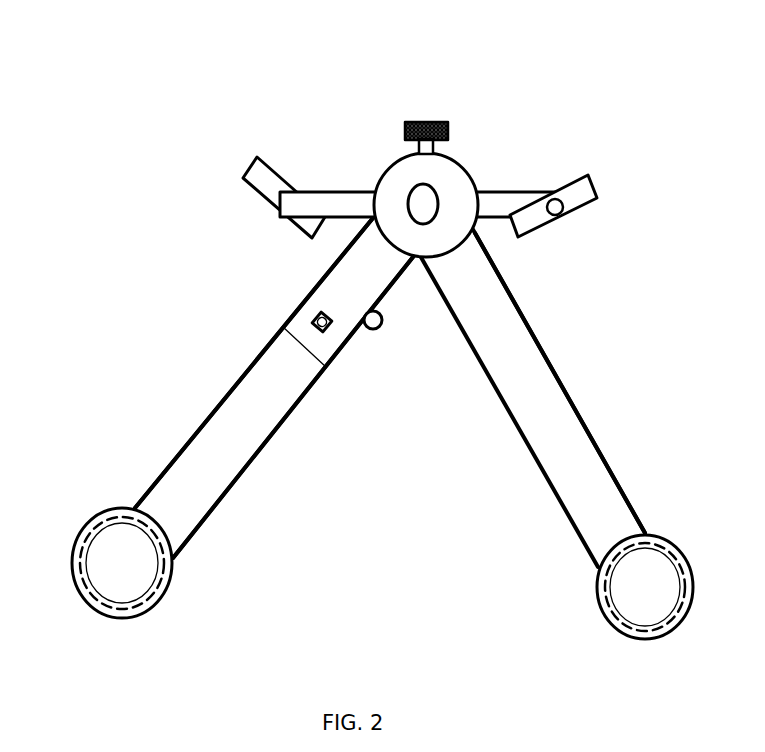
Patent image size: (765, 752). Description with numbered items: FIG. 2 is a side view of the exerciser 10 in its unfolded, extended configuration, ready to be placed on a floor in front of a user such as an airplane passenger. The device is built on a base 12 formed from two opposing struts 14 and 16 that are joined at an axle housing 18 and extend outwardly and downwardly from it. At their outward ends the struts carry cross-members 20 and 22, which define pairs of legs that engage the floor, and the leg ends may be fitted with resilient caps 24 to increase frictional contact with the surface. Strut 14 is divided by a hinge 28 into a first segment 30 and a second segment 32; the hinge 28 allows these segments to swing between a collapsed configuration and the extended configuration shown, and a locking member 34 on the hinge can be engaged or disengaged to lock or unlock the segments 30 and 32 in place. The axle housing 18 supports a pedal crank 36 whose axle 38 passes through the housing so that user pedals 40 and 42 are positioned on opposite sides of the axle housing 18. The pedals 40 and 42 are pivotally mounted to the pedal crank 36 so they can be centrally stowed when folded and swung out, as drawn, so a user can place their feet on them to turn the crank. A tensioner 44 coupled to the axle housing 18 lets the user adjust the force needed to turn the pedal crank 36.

The exerciser 10 is at (268, 92).
The base 12 is at (606, 388).
The strut 14 is at (187, 442).
The strut 16 is at (628, 500).
The axle housing 18 is at (455, 161).
The cross-member 20 is at (148, 602).
The cross-member 22 is at (618, 632).
The resilient cap 24 is at (73, 555).
The hinge 28 is at (381, 328).
The first segment 30 is at (264, 443).
The second segment 32 is at (320, 272).
The locking member 34 is at (316, 330).
The pedal crank 36 is at (319, 190).
The axle 38 is at (409, 198).
The user pedal 40 is at (254, 165).
The user pedal 42 is at (597, 190).
The tensioner 44 is at (437, 122).